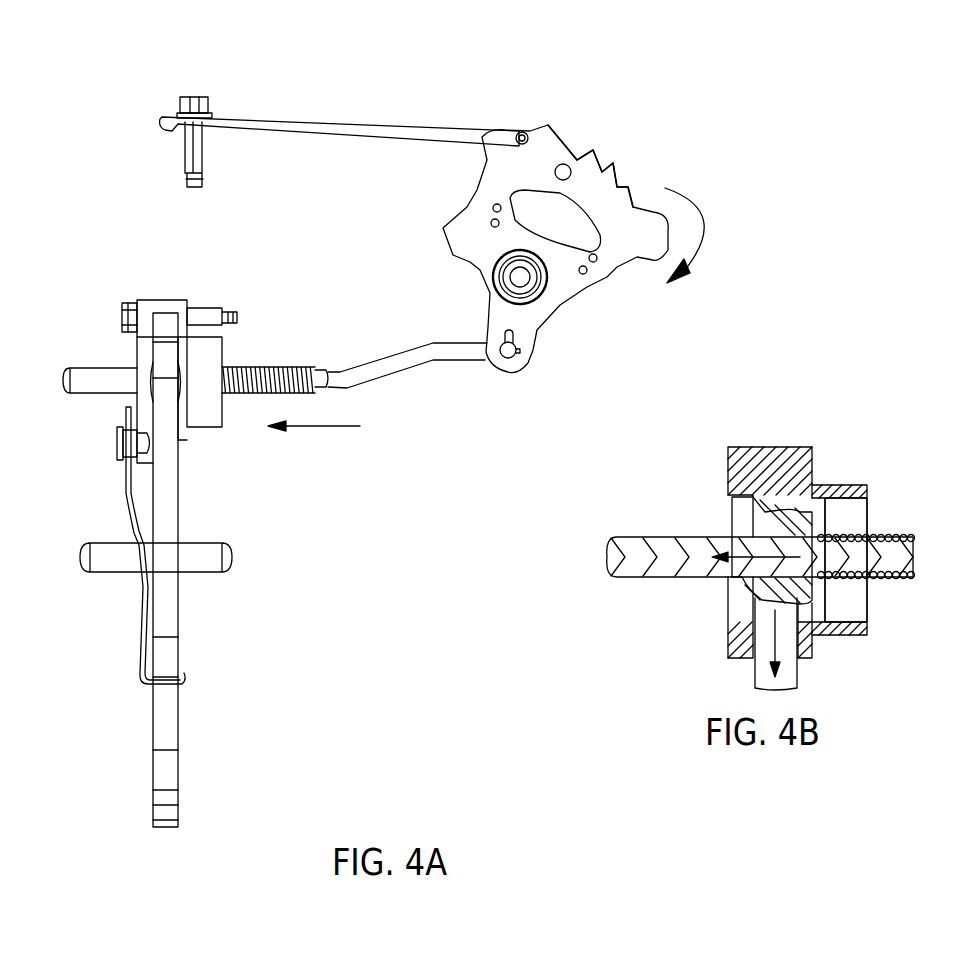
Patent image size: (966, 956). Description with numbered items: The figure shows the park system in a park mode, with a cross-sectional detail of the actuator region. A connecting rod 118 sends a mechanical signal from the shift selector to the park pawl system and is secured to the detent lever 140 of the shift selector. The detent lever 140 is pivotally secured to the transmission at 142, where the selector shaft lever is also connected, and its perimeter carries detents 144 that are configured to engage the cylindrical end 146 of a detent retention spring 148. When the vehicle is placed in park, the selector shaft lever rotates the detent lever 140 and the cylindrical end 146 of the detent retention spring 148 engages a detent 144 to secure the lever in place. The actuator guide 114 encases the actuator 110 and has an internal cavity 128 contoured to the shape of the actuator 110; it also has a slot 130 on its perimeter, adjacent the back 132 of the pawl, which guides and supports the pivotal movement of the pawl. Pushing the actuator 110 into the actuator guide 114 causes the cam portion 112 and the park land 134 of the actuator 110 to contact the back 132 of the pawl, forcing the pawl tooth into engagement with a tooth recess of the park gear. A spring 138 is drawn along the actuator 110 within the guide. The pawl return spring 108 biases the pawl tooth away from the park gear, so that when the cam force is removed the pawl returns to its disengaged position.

In FIG. 4A, the pawl return spring 108 is at (130, 517).
In FIG. 4B, the actuator 110 is at (652, 540).
In FIG. 4B, the cam portion 112 is at (750, 527).
In FIG. 4B, the actuator guide 114 is at (863, 490).
In FIG. 4A, the connecting rod 118 is at (403, 363).
In FIG. 4B, the internal cavity 128 is at (850, 518).
In FIG. 4A, the slot 130 is at (167, 322).
In FIG. 4B, the back of the pawl 132 is at (780, 603).
In FIG. 4B, the park land 134 is at (807, 512).
In FIG. 4B, the spring 138 is at (903, 578).
In FIG. 4A, the detent lever 140 is at (602, 272).
In FIG. 4A, the pivot of the detent lever 142 is at (517, 277).
In FIG. 4A, the detents 144 is at (600, 170).
In FIG. 4A, the cylindrical end 146 is at (523, 130).
In FIG. 4A, the detent retention spring 148 is at (357, 122).